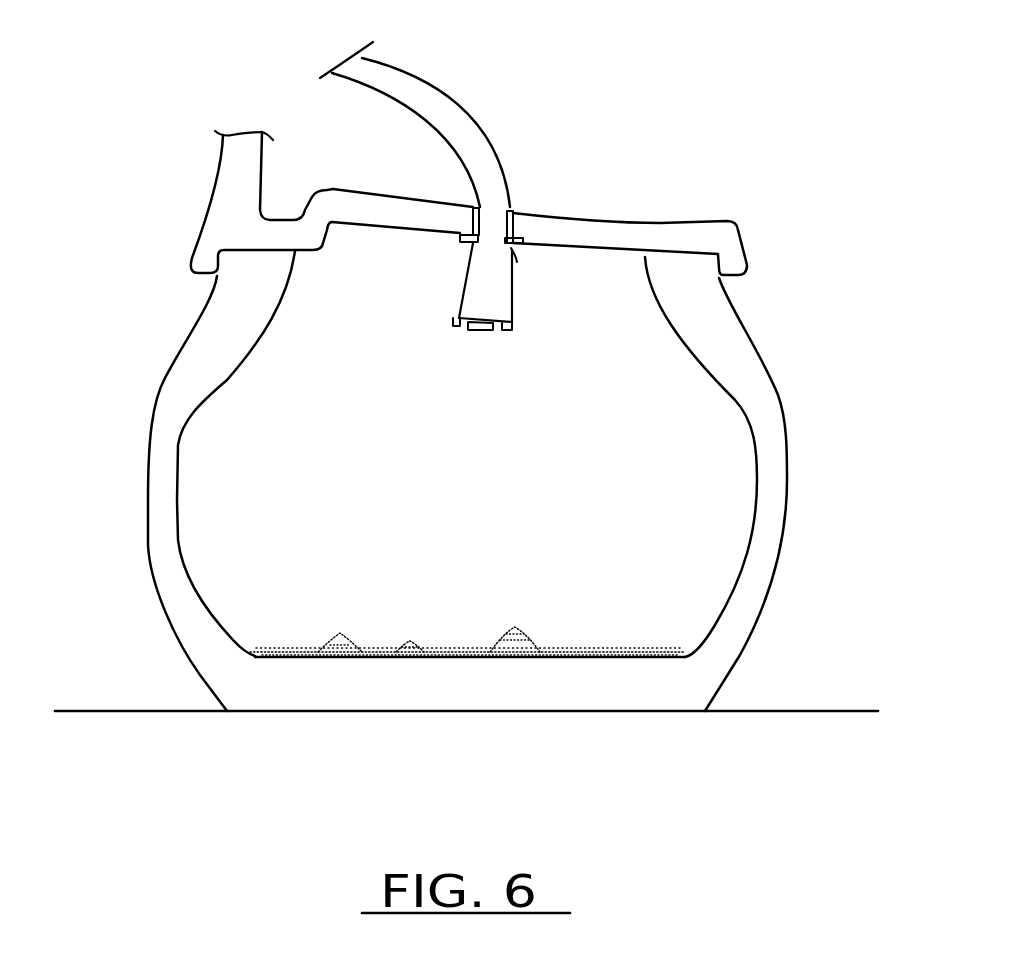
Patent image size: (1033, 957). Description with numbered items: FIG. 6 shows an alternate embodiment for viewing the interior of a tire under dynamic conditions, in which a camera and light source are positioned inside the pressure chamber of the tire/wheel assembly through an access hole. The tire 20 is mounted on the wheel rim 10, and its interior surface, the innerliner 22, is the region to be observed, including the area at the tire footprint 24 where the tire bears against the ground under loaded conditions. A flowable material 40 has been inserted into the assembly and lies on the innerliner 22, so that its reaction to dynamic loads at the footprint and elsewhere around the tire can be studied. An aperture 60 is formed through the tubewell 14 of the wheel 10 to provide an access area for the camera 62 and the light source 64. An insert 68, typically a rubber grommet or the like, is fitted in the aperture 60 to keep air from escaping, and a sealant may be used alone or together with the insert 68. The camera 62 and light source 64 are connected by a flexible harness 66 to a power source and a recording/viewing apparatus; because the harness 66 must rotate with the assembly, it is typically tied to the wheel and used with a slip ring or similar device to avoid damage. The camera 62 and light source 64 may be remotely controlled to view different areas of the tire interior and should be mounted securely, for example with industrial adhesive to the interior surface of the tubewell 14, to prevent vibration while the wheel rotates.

The wheel rim 10 is at (233, 201).
The tubewell 14 is at (647, 222).
The tire 20 is at (738, 362).
The innerliner 22 is at (255, 645).
The tire footprint 24 is at (777, 710).
The flowable material 40 is at (520, 632).
The aperture 60 is at (517, 214).
The camera 62 is at (475, 331).
The light source 64 is at (452, 326).
The flexible harness 66 is at (443, 108).
The insert 68 is at (517, 262).